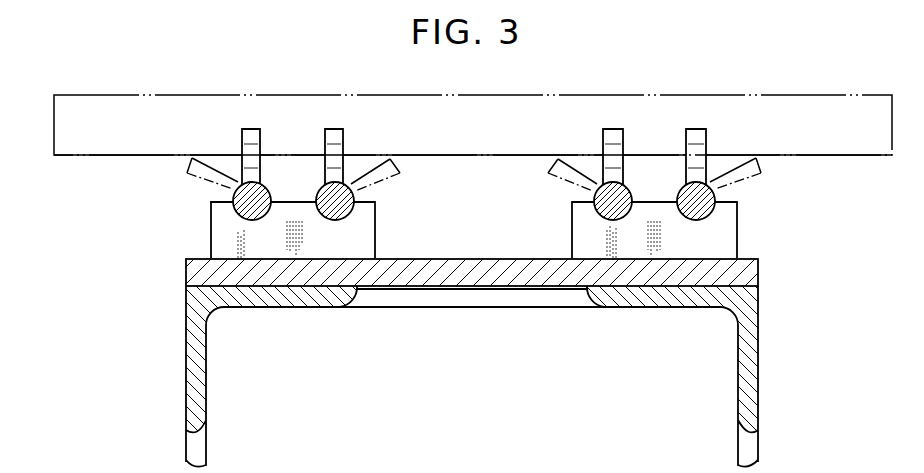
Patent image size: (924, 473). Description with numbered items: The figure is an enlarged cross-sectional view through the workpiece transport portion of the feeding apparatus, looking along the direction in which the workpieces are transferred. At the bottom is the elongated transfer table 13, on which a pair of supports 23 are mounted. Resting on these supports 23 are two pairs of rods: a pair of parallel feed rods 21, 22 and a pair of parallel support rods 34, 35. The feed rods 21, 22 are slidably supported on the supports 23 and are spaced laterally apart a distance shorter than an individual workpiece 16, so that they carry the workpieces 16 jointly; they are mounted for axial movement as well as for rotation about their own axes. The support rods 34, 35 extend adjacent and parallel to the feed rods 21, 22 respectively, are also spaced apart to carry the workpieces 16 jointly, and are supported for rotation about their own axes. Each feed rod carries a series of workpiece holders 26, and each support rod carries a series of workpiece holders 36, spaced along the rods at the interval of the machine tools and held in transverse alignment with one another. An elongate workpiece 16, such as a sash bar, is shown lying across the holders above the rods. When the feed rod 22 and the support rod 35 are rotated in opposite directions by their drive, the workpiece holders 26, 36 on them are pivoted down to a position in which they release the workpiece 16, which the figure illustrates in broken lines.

The transfer table 13 is at (470, 262).
The workpiece 16 is at (482, 101).
The feed rod 21 is at (356, 187).
The feed rod 22 is at (594, 189).
The support 23 is at (362, 234).
The workpiece holder 26 is at (335, 130).
The support rod 34 is at (232, 190).
The support rod 35 is at (717, 191).
The workpiece holder 36 is at (251, 129).